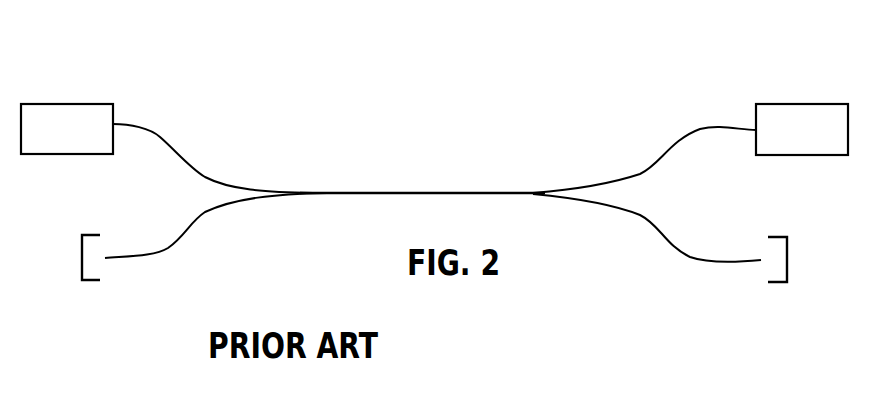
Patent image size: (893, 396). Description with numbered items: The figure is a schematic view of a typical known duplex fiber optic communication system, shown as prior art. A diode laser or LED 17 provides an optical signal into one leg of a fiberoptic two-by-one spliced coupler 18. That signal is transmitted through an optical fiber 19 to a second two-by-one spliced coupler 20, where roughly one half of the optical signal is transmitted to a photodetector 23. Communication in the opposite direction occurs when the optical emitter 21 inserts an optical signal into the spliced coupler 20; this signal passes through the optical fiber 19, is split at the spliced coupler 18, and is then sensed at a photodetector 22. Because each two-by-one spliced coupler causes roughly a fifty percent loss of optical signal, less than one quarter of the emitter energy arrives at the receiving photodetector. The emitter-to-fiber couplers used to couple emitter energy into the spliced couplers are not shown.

The diode laser or LED 17 is at (70, 102).
The fiberoptic 2×1 spliced coupler 18 is at (260, 189).
The optical fiber 19 is at (443, 191).
The second 2×1 spliced coupler 20 is at (544, 191).
The optical emitter 21 is at (805, 102).
The photodetector 22 is at (93, 280).
The photodetector 23 is at (785, 283).